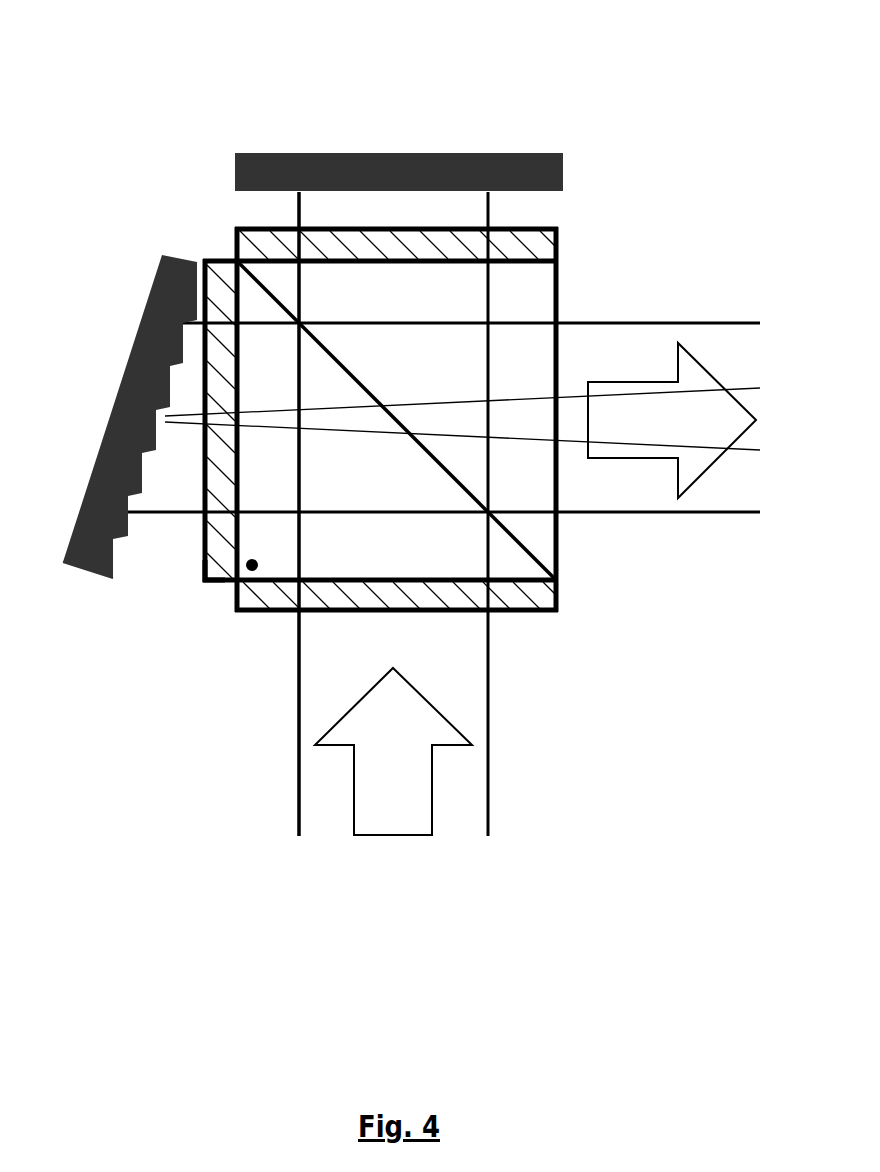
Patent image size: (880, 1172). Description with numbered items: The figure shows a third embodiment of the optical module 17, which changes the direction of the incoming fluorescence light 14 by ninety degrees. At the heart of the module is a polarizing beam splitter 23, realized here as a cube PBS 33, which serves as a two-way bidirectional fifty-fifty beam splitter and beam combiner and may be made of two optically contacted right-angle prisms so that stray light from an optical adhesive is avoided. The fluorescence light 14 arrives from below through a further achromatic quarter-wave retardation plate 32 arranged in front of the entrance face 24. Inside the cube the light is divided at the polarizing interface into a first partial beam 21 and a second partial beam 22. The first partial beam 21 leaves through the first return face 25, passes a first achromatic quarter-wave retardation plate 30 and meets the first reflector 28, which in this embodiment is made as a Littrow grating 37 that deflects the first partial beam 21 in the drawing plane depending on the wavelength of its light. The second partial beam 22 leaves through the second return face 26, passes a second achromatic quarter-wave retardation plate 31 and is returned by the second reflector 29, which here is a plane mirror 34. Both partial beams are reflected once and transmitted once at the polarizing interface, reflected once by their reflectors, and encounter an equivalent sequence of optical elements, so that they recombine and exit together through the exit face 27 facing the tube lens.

The fluorescence light 14 is at (296, 763).
The optical module 17 is at (540, 97).
The first partial beam 21 is at (158, 518).
The second partial beam 22 is at (296, 212).
The polarizing beam splitter 23 is at (449, 443).
The entrance face 24 is at (445, 633).
The first return face 25 is at (232, 565).
The second return face 26 is at (542, 258).
The exit face 27 is at (562, 288).
The first reflector 28 is at (160, 251).
The second reflector 29 is at (565, 164).
The first achromatic quarter-wave retardation plate 30 is at (197, 585).
The second achromatic quarter-wave retardation plate 31 is at (430, 224).
The further achromatic quarter-wave retardation plate 32 is at (247, 614).
The cube PBS 33 is at (561, 570).
The plane mirror 34 is at (266, 152).
The Littrow grating 37 is at (90, 575).